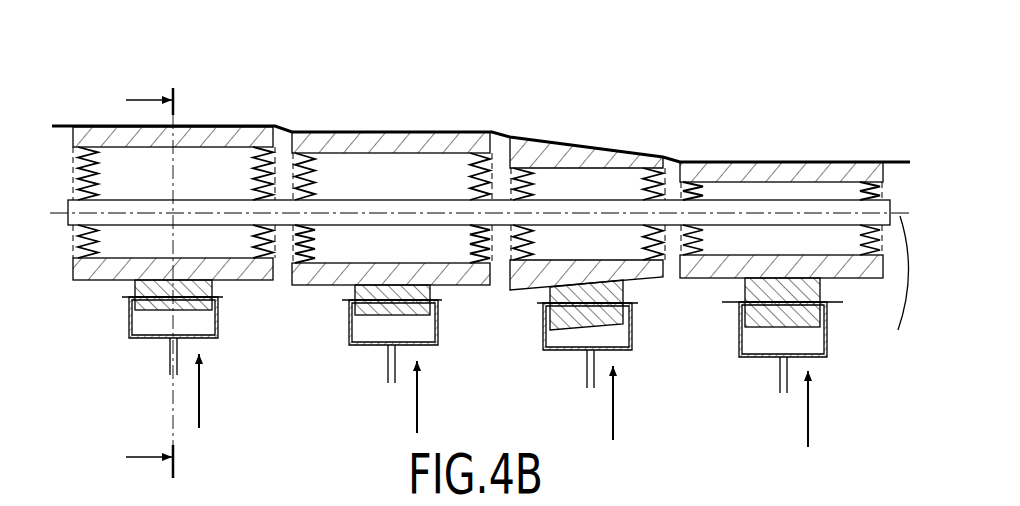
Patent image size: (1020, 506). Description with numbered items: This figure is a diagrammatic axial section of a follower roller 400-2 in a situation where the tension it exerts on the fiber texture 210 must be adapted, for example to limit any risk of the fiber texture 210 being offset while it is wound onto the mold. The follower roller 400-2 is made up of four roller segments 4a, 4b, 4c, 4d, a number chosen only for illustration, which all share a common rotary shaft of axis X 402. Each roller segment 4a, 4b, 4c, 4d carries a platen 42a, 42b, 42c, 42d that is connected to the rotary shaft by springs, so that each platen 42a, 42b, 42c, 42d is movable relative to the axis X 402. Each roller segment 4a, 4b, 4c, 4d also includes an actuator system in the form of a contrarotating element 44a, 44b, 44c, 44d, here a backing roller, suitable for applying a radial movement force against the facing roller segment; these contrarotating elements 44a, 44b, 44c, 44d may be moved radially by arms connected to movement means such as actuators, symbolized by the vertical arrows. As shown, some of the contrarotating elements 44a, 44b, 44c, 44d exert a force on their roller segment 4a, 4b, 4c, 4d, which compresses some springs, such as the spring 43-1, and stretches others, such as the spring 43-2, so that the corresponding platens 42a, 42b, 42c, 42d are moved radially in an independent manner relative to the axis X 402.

The follower roller 400-2 is at (284, 96).
The fiber texture 210 is at (68, 125).
The platen 42a is at (218, 127).
The platen 42b is at (386, 133).
The platen 42c is at (585, 152).
The platen 42d is at (778, 163).
The spring 43-1 is at (254, 249).
The spring 43-2 is at (254, 179).
The roller segment 4a is at (90, 284).
The roller segment 4b is at (306, 290).
The roller segment 4c is at (513, 294).
The roller segment 4d is at (697, 282).
The contrarotating element 44a is at (156, 331).
The contrarotating element 44b is at (374, 337).
The contrarotating element 44c is at (571, 343).
The contrarotating element 44d is at (767, 333).
The axis of the rotary shaft 402 is at (893, 286).